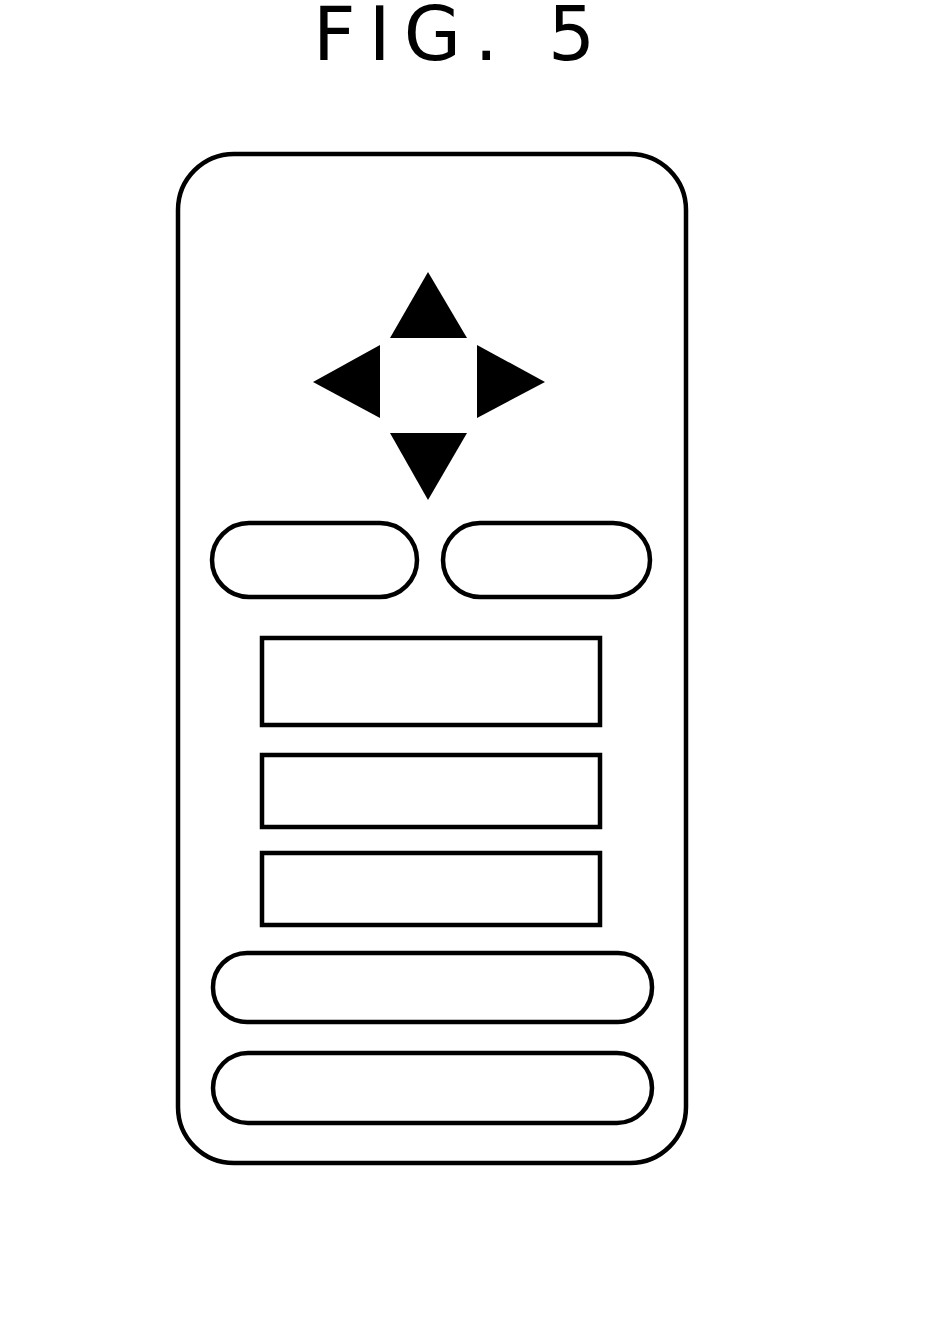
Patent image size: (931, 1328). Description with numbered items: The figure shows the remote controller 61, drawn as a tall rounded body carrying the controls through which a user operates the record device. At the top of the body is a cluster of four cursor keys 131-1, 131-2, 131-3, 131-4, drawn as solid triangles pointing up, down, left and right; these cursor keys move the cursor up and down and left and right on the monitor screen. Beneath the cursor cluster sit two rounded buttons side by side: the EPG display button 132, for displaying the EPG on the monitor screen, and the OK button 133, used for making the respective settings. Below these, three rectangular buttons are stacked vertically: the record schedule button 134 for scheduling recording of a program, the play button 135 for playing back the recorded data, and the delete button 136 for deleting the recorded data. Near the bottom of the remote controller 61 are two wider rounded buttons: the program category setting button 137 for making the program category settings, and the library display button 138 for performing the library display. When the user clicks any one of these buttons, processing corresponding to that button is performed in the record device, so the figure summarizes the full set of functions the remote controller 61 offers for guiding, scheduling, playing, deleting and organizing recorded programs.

The remote controller 61 is at (377, 1163).
The cursor key 131-1 is at (403, 313).
The cursor key 131-2 is at (453, 467).
The cursor key 131-3 is at (347, 403).
The cursor key 131-4 is at (526, 368).
The EPG display button 132 is at (212, 561).
The OK button 133 is at (650, 553).
The record schedule button 134 is at (600, 682).
The play button 135 is at (600, 783).
The delete button 136 is at (600, 882).
The program category setting button 137 is at (652, 988).
The library display button 138 is at (652, 1088).